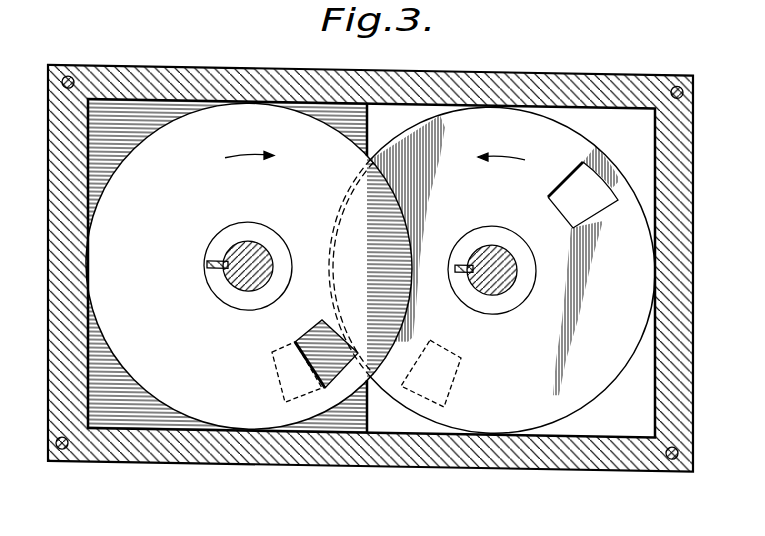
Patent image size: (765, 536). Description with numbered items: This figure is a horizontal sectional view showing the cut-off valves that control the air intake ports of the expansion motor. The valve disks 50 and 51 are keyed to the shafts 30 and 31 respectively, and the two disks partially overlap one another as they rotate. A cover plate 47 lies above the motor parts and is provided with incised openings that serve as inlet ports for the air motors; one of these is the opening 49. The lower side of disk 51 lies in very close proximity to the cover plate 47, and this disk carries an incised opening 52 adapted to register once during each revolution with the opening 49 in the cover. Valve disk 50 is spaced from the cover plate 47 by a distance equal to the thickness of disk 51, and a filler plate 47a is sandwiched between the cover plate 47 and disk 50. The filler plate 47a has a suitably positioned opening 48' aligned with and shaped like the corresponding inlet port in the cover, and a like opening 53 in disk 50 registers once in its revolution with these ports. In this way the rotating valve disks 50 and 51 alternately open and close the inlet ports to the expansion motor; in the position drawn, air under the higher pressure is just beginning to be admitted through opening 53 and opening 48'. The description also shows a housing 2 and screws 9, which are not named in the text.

The housing frame 2 is at (680, 174).
The fastening screws 9 is at (688, 80).
The cover plate 47 is at (613, 410).
The filler plate 47a is at (118, 410).
The valve disk 50 is at (157, 297).
The valve disk 51 is at (472, 195).
The shaft 30 is at (243, 238).
The shaft 31 is at (493, 237).
The incised opening 52 is at (571, 212).
The opening 53 is at (316, 326).
The opening 48' is at (274, 372).
The incised opening 49 is at (452, 387).